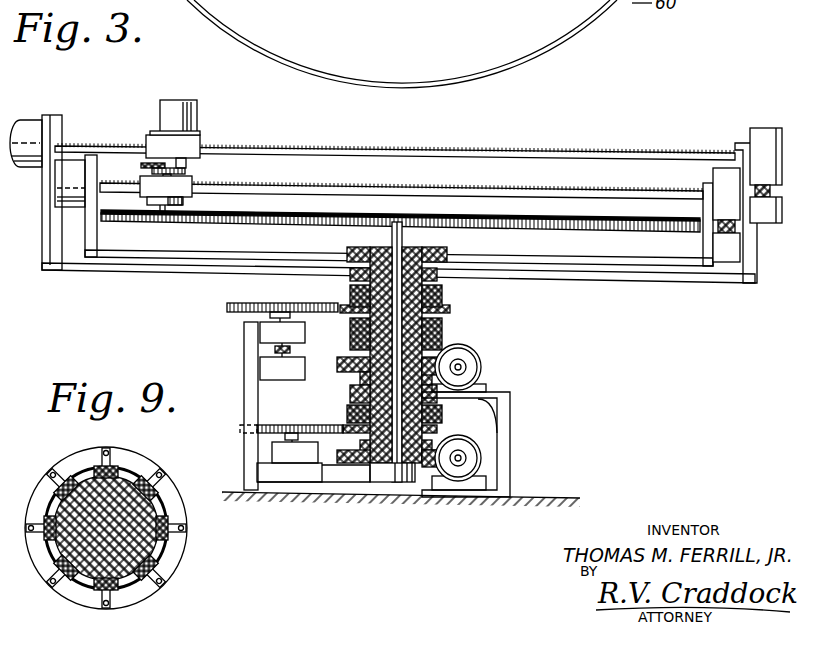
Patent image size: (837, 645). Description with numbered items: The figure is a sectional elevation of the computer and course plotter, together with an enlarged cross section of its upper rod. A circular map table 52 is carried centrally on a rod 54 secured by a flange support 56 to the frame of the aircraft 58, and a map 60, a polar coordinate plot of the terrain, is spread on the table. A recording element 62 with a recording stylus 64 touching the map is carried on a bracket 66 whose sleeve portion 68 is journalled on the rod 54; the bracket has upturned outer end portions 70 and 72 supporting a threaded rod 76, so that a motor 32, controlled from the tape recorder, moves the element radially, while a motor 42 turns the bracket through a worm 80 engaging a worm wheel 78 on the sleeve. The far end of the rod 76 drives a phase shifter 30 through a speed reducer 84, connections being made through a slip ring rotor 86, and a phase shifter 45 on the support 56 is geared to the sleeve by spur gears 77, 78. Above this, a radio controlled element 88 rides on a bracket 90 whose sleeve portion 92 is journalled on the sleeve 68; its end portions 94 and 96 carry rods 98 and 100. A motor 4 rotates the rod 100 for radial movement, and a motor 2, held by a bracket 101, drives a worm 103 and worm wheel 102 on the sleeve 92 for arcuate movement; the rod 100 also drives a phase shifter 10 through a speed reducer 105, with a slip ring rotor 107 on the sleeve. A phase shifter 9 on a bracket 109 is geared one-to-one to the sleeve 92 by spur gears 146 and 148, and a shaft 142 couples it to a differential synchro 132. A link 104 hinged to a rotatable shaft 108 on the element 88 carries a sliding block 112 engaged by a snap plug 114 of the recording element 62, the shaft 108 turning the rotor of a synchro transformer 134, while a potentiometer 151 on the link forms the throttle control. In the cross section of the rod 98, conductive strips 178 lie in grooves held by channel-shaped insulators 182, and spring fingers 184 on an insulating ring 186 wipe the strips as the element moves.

In FIG. 3, the motor 2 is at (472, 362).
In FIG. 3, the motor 4 is at (32, 119).
In FIG. 3, the phase shifter 9 is at (262, 331).
In FIG. 3, the phase shifter 10 is at (776, 213).
In FIG. 3, the phase shifter 30 is at (725, 265).
In FIG. 3, the motor 32 is at (74, 207).
In FIG. 3, the motor 42 is at (474, 462).
In FIG. 3, the phase shifter 45 is at (272, 452).
In FIG. 3, the circular map table 52 is at (580, 233).
In FIG. 3, the rod 54 is at (396, 483).
In FIG. 3, the flange support 56 is at (300, 493).
In FIG. 3, the frame of the aircraft 58 is at (401, 517).
In FIG. 3, the map 60 is at (400, 226).
In FIG. 3, the recording element 62 is at (184, 202).
In FIG. 3, the recording stylus 64 is at (156, 220).
In FIG. 3, the bracket 66 is at (262, 250).
In FIG. 3, the sleeve portion 68 is at (371, 392).
In FIG. 3, the outer end portion 70 is at (96, 230).
In FIG. 3, the outer end portion 72 is at (703, 242).
In FIG. 3, the rod 76 is at (302, 182).
In FIG. 3, the spur gear 77 is at (348, 413).
In FIG. 3, the worm wheel 78 is at (278, 425).
In FIG. 3, the worm 80 is at (486, 434).
In FIG. 3, the speed reducer 84 is at (713, 176).
In FIG. 3, the slip ring rotor 86 is at (442, 414).
In FIG. 3, the radio controlled element 88 is at (214, 143).
In FIG. 3, the bracket 90 is at (146, 274).
In FIG. 3, the sleeve portion 92 is at (440, 341).
In FIG. 3, the outer end portion 94 is at (43, 230).
In FIG. 3, the outer end portion 96 is at (755, 254).
In FIG. 9, the rod 98 is at (165, 548).
In FIG. 3, the rod 100 is at (395, 138).
In FIG. 3, the bracket 101 is at (510, 416).
In FIG. 3, the worm wheel 102 is at (370, 372).
In FIG. 3, the worm 103 is at (466, 368).
In FIG. 3, the link 104 is at (151, 170).
In FIG. 3, the speed reducer 105 is at (767, 131).
In FIG. 3, the slip ring rotor 107 is at (448, 295).
In FIG. 3, the rotatable shaft 108 is at (188, 162).
In FIG. 3, the bracket 109 is at (244, 412).
In FIG. 3, the sliding block 112 is at (173, 144).
In FIG. 3, the snap plug 114 is at (160, 178).
In FIG. 3, the differential synchro 132 is at (262, 372).
In FIG. 3, the synchro transformer 134 is at (183, 100).
In FIG. 3, the shaft 142 is at (275, 350).
In FIG. 3, the spur gear 146 is at (240, 303).
In FIG. 3, the spur gear 148 is at (347, 300).
In FIG. 3, the potentiometer 151 is at (141, 163).
In FIG. 9, the conductive strips 178 is at (170, 522).
In FIG. 9, the channel-shaped insulators 182 is at (114, 466).
In FIG. 9, the spring fingers 184 is at (70, 487).
In FIG. 9, the ring 186 is at (140, 596).